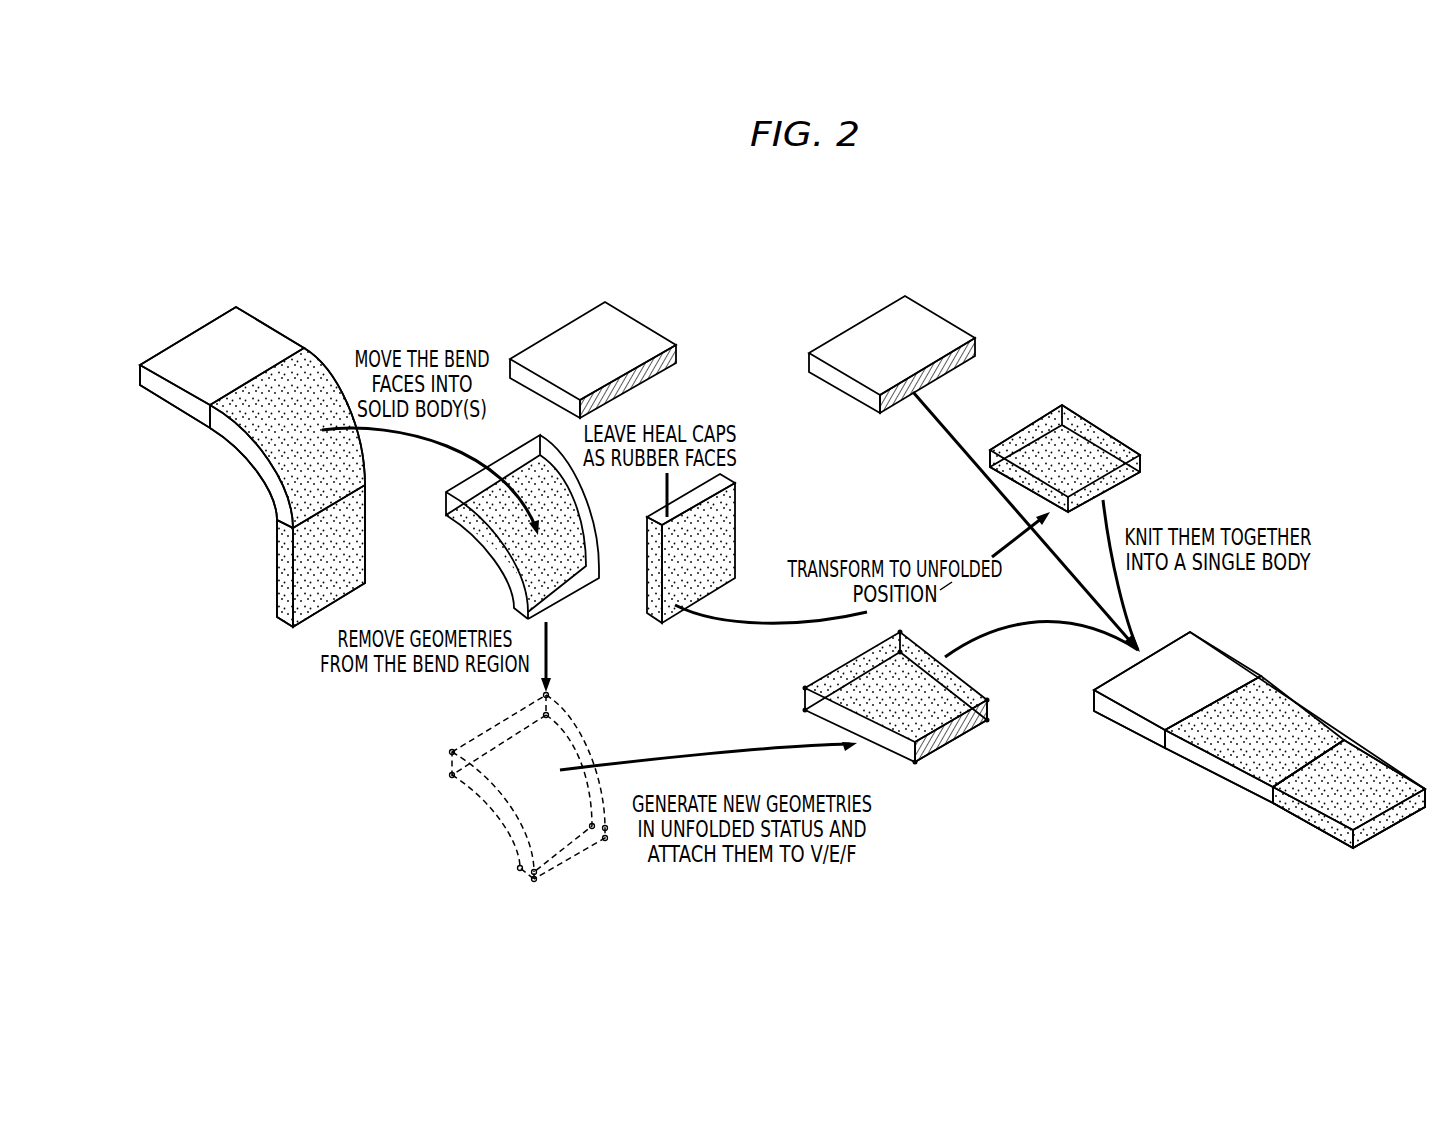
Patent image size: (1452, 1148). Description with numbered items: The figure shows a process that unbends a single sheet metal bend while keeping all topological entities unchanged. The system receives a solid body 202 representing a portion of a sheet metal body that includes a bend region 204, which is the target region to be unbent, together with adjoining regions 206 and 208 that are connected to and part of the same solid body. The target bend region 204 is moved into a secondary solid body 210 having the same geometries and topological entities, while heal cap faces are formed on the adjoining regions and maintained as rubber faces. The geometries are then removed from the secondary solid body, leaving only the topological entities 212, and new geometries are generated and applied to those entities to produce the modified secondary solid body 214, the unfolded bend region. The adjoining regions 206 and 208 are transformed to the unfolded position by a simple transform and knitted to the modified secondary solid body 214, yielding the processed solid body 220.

The solid body 202 is at (296, 284).
The bend region 204 is at (252, 453).
The adjoining region 206 is at (215, 327).
The adjoining region 208 is at (282, 557).
The secondary solid body 210 is at (482, 548).
The topological entities 212 is at (493, 808).
The modified secondary solid body 214 is at (915, 764).
The processed solid body 220 is at (1342, 668).